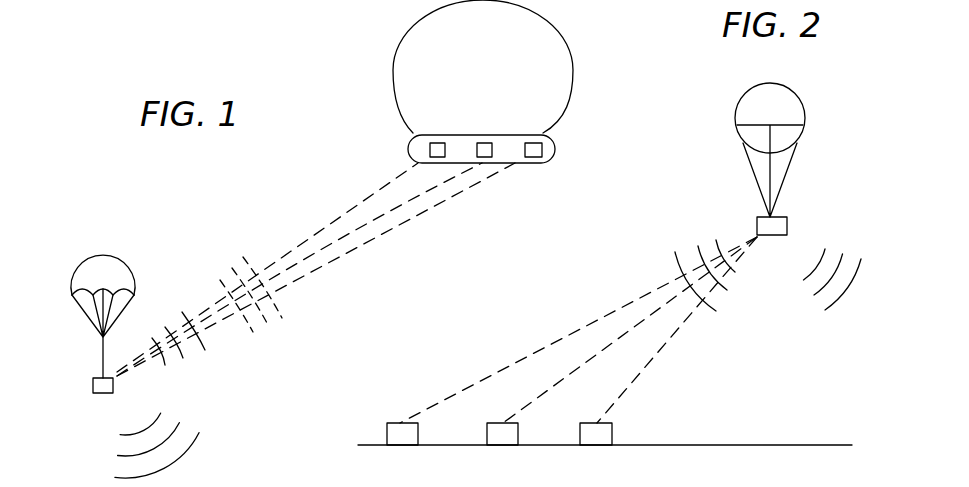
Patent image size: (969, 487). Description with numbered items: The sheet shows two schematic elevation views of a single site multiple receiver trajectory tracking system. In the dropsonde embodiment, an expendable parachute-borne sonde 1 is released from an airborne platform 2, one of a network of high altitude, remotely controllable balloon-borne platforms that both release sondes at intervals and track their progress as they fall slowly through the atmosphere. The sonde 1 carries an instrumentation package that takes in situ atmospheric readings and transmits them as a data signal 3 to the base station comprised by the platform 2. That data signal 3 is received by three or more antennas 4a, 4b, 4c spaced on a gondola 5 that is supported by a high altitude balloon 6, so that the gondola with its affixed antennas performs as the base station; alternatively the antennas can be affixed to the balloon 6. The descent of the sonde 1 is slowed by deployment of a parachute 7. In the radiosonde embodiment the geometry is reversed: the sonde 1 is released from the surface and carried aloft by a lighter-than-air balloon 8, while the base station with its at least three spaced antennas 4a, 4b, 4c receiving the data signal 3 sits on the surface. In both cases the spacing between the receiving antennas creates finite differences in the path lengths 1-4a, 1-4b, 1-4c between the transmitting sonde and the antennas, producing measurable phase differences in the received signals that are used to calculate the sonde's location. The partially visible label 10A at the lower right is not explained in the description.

In FIG. 1, the sonde 1 is at (93, 385).
In FIG. 2, the sonde 1 is at (788, 220).
In FIG. 1, the airborne platform 2 is at (342, 47).
In FIG. 1, the data signal 3 is at (268, 332).
In FIG. 2, the data signal 3 is at (675, 256).
In FIG. 1, the antenna 4a is at (442, 158).
In FIG. 2, the antenna 4a is at (613, 431).
In FIG. 1, the antenna 4b is at (487, 158).
In FIG. 2, the antenna 4b is at (485, 427).
In FIG. 1, the antenna 4c is at (542, 148).
In FIG. 2, the antenna 4c is at (388, 425).
In FIG. 1, the gondola 5 is at (407, 152).
In FIG. 1, the high altitude balloon 6 is at (573, 58).
In FIG. 1, the parachute 7 is at (87, 255).
In FIG. 2, the lighter-than-air balloon 8 is at (795, 90).
In FIG. 1, the path length 1-4a is at (305, 245).
In FIG. 2, the path length 1-4a is at (652, 353).
In FIG. 1, the path length 1-4b is at (367, 220).
In FIG. 2, the path length 1-4b is at (600, 353).
In FIG. 1, the path length 1-4c is at (393, 230).
In FIG. 2, the path length 1-4c is at (588, 323).
In FIG. 2, the figure label (cut off) 10A is at (824, 478).